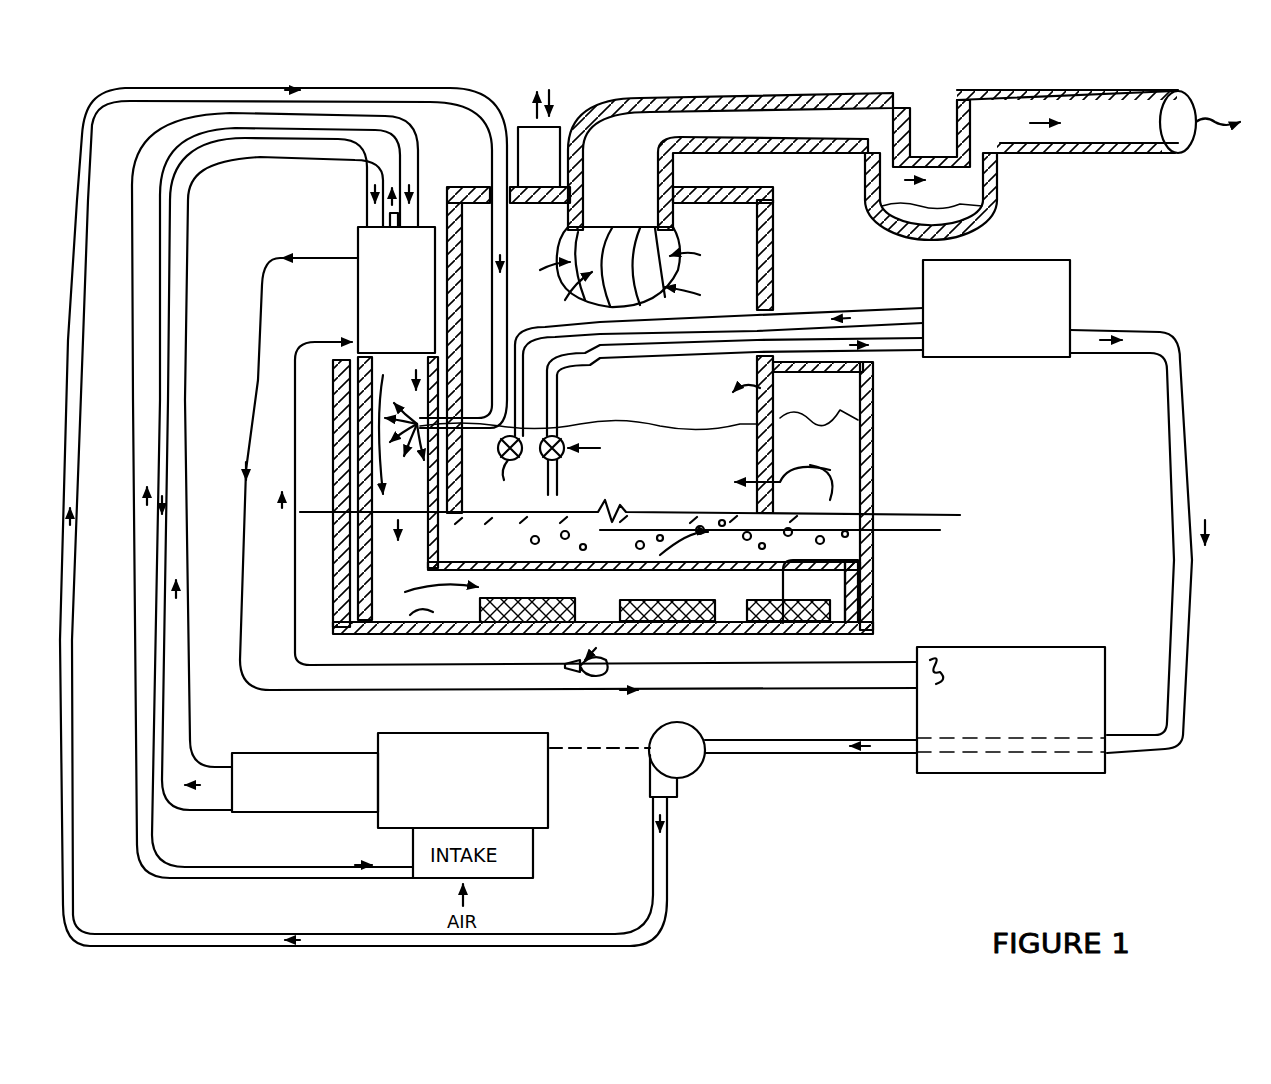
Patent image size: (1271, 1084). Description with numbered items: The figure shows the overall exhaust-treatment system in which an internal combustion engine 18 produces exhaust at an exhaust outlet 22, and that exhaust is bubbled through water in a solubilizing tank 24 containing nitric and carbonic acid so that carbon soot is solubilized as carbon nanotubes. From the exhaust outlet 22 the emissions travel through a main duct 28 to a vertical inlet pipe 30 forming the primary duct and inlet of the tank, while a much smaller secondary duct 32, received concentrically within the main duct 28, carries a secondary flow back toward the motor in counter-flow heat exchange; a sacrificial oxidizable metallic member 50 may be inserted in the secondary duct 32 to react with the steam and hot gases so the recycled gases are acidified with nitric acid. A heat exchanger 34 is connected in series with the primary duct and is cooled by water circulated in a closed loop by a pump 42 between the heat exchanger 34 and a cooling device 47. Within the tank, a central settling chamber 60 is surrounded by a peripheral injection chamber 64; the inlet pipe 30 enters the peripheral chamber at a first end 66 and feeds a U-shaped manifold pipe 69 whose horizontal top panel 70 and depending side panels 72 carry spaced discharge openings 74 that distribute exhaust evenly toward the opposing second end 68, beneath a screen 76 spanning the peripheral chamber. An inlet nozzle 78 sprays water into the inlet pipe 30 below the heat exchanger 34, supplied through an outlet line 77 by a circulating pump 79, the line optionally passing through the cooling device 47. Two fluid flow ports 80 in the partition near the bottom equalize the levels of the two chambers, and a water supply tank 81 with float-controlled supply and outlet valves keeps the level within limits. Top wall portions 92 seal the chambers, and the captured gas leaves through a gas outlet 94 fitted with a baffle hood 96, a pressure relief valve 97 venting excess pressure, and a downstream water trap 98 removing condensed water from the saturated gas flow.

The internal combustion engine 18 is at (420, 744).
The exhaust outlet 22 is at (314, 752).
The solubilizing tank 24 is at (982, 405).
The main duct 28 is at (188, 250).
The vertical inlet pipe 30 is at (362, 446).
The secondary duct 32 is at (253, 142).
The heat exchanger 34 is at (356, 276).
The pump 42 is at (606, 650).
The cooling device 47 is at (1063, 642).
The sacrificial oxidizable metallic member 50 is at (157, 733).
The central settling chamber 60 is at (660, 410).
The peripheral injection chamber 64 is at (845, 400).
The first end 66 is at (333, 619).
The second end 68 is at (880, 592).
The manifold pipe 69 is at (412, 630).
The top panel 70 is at (940, 530).
The side panels 72 is at (873, 575).
The discharge openings 74 is at (700, 625).
The screen 76 is at (960, 515).
The outlet line 77 is at (668, 897).
The inlet nozzle 78 is at (408, 462).
The circulating pump 79 is at (702, 727).
The fluid flow ports 80 is at (757, 475).
The water supply tank 81 is at (1070, 296).
The top wall portions 92 is at (760, 198).
The gas outlet 94 is at (643, 140).
The baffle hood 96 is at (682, 283).
The pressure relief valve 97 is at (562, 122).
The water trap 98 is at (998, 180).